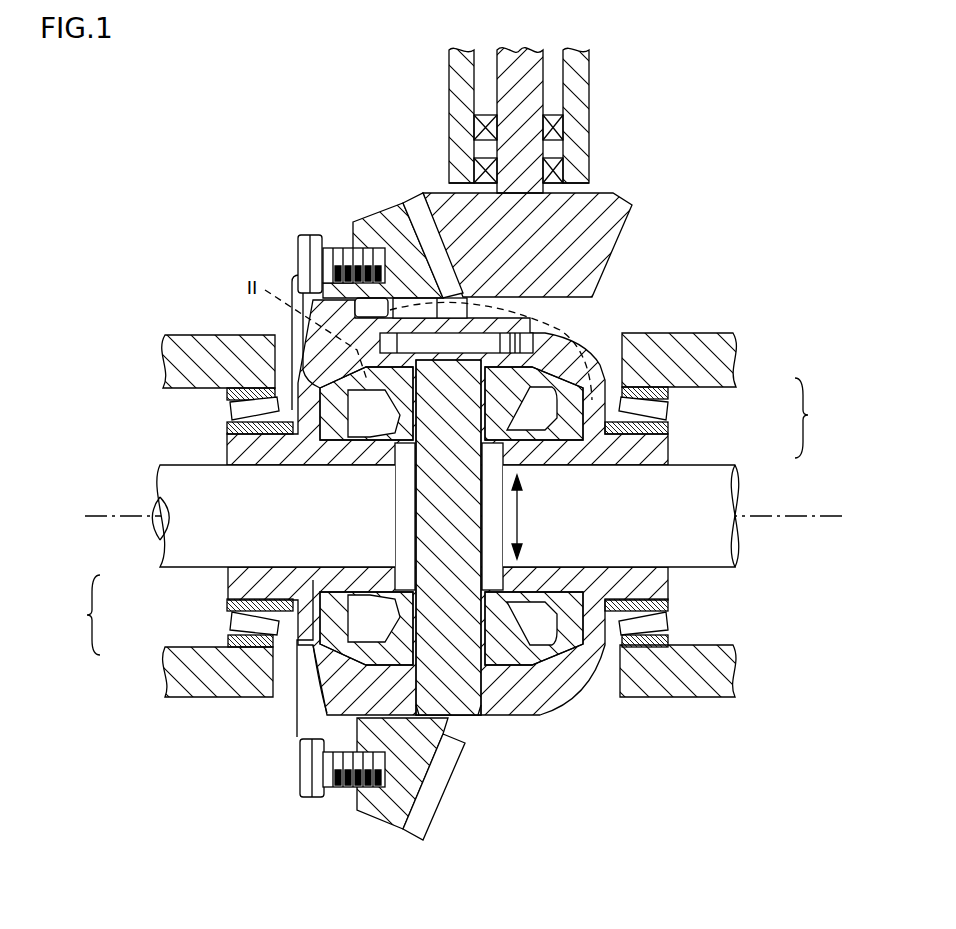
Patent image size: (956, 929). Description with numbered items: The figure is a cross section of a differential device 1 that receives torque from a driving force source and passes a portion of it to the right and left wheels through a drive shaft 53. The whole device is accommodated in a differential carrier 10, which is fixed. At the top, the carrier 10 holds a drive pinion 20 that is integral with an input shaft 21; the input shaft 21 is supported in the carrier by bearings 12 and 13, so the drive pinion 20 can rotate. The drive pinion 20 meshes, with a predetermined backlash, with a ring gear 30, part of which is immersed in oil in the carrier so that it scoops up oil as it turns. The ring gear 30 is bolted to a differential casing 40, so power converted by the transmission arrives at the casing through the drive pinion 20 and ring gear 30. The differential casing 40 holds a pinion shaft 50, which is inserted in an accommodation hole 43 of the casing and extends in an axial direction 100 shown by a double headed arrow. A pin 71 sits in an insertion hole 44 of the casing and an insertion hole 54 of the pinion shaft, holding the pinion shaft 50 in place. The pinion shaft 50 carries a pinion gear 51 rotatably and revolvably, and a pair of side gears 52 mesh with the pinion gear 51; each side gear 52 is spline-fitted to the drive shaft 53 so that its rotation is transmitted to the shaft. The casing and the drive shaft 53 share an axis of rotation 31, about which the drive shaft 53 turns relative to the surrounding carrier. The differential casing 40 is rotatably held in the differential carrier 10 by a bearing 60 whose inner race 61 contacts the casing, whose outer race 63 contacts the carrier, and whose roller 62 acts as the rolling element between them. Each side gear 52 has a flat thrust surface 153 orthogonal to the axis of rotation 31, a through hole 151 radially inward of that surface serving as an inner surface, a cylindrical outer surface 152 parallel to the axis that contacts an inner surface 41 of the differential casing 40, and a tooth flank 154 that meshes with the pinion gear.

The differential device 1 is at (748, 189).
The differential carrier 10 is at (460, 75).
The bearing 12 is at (477, 128).
The bearing 13 is at (477, 173).
The drive pinion 20 is at (557, 240).
The input shaft 21 is at (527, 95).
The ring gear 30 is at (383, 222).
The axis of rotation 31 is at (800, 516).
The differential casing 40 is at (250, 452).
The inner surface 41 is at (312, 365).
The accommodation hole 43 is at (478, 690).
The insertion hole 44 is at (520, 316).
The pinion shaft 50 is at (453, 682).
The pinion gear 51 is at (575, 470).
The side gear 52 is at (230, 417).
The drive shaft 53 is at (180, 487).
The insertion hole 54 is at (435, 345).
The bearing 60 is at (450, 516).
The inner race 61 is at (640, 427).
The roller 62 is at (652, 415).
The outer race 63 is at (650, 395).
The pin 71 is at (540, 298).
The axial direction 100 is at (525, 522).
The through hole 151 is at (357, 570).
The outer surface 152 is at (345, 640).
The thrust surface 153 is at (320, 617).
The tooth flank 154 is at (365, 623).